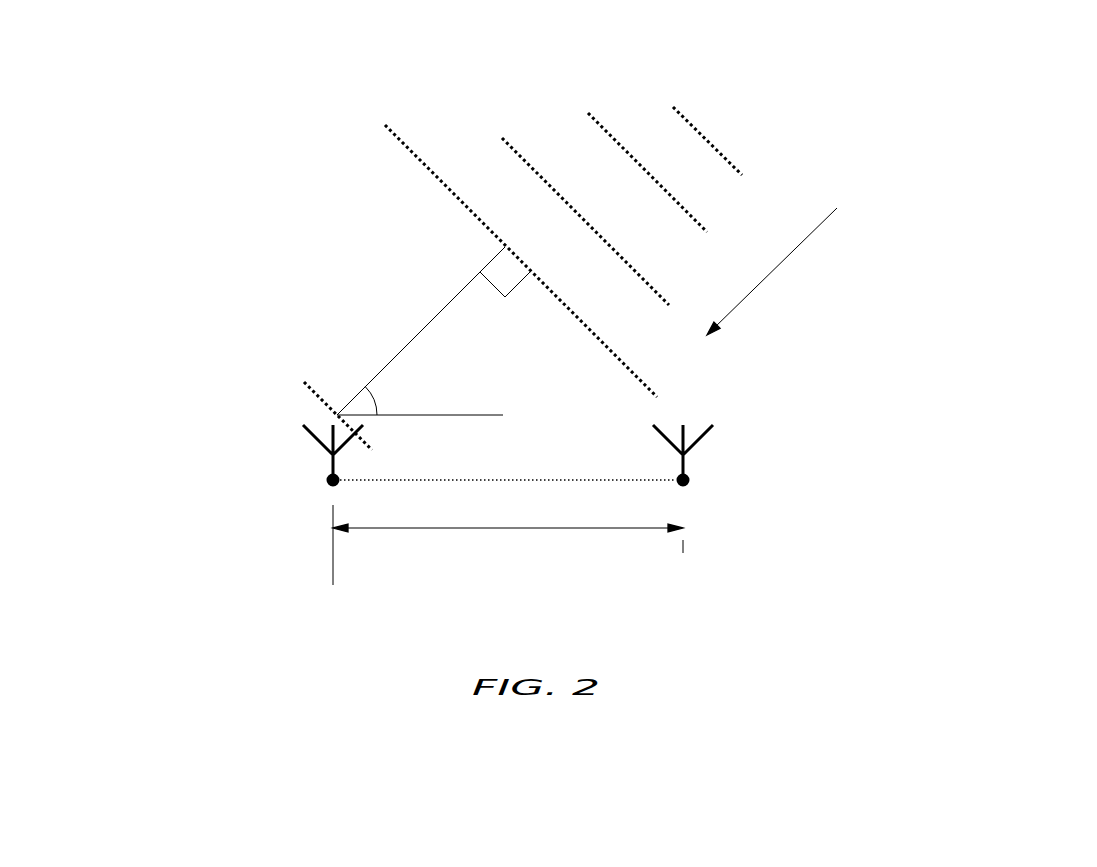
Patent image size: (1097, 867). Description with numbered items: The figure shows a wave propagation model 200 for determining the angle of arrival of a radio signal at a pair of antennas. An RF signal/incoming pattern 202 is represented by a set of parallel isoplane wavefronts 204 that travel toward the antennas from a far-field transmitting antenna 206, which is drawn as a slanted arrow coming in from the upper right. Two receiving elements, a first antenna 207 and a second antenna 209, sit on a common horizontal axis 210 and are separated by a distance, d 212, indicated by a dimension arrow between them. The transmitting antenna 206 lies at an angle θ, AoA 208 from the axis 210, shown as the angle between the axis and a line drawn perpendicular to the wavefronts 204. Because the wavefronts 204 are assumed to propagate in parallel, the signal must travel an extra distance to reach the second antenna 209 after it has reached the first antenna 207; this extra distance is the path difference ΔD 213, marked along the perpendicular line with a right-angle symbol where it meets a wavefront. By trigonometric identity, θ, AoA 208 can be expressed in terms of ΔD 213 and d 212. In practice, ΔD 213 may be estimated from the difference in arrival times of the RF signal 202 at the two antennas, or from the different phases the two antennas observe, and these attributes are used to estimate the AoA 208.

The wave propagation model 200 is at (180, 88).
The RF signal/incoming pattern 202 is at (757, 287).
The wavefronts 204 is at (682, 92).
The transmitting antenna 206 is at (936, 203).
The antenna 1 207 is at (687, 484).
The θ, AoA 208 is at (422, 398).
The antenna 2 209 is at (330, 485).
The axis 210 is at (570, 483).
The distance d 212 is at (508, 545).
The path difference ΔD 213 is at (392, 360).